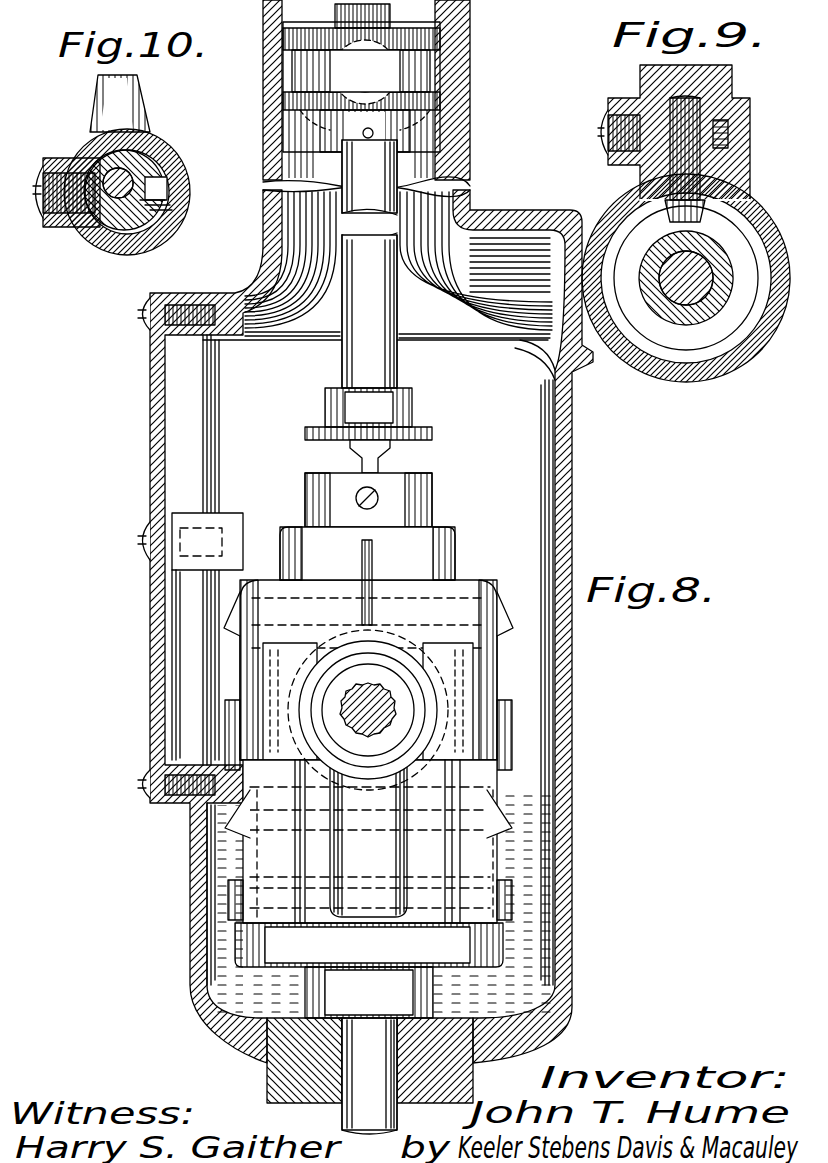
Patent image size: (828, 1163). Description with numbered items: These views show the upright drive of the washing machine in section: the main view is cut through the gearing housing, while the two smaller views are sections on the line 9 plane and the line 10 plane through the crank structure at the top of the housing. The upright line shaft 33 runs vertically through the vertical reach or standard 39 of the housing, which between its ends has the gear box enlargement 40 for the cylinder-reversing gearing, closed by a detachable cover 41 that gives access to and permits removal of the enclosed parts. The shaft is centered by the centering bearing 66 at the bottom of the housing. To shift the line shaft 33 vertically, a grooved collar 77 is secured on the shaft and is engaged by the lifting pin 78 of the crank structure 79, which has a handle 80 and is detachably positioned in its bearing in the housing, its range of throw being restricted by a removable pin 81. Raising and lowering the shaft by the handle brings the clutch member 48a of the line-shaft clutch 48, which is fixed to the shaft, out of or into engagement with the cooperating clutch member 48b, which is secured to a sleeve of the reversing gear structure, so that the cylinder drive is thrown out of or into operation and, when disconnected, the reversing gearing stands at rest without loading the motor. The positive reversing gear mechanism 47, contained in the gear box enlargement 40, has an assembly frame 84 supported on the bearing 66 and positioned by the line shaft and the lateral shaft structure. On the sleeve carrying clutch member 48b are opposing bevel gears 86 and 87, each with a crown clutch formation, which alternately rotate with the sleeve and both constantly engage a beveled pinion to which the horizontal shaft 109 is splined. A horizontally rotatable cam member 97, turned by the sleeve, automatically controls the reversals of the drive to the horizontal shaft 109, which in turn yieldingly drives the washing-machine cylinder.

In FIG. 8, the section line 9— 9 is at (228, 65).
In FIG. 9, the section line 10— 10 is at (567, 120).
In FIG. 8, the line shaft 33 is at (345, 344).
In FIG. 9, the line shaft 33 is at (698, 272).
In FIG. 9, the vertical reach or standard 39 is at (685, 362).
In FIG. 10, the vertical reach or standard 39 is at (130, 245).
In FIG. 8, the gear box enlargement 40 is at (572, 720).
In FIG. 8, the detachable cover 41 is at (160, 648).
In FIG. 8, the positive reversing gear mechanism 47 is at (470, 577).
In FIG. 8, the line-shaft clutch 48 is at (442, 452).
In FIG. 8, the clutch member 48a is at (414, 392).
In FIG. 8, the cooperating clutch member 48b is at (305, 480).
In FIG. 8, the centering bearing 66 is at (305, 1064).
In FIG. 8, the grooved collar 77 is at (440, 42).
In FIG. 9, the grooved collar 77 is at (678, 326).
In FIG. 8, the lifting pin 78 is at (437, 90).
In FIG. 9, the lifting pin 78 is at (665, 218).
In FIG. 10, the lifting pin 78 is at (140, 190).
In FIG. 8, the crank structure 79 is at (262, 96).
In FIG. 9, the crank structure 79 is at (735, 70).
In FIG. 10, the crank structure 79 is at (150, 175).
In FIG. 10, the handle 80 is at (96, 98).
In FIG. 9, the removable pin 81 is at (636, 108).
In FIG. 10, the removable pin 81 is at (80, 225).
In FIG. 8, the assembly frame 84 is at (420, 566).
In FIG. 8, the bevel gear 86 is at (235, 628).
In FIG. 8, the bevel gear 87 is at (222, 800).
In FIG. 8, the cam member 97 is at (505, 893).
In FIG. 8, the horizontal shaft 109 is at (392, 690).